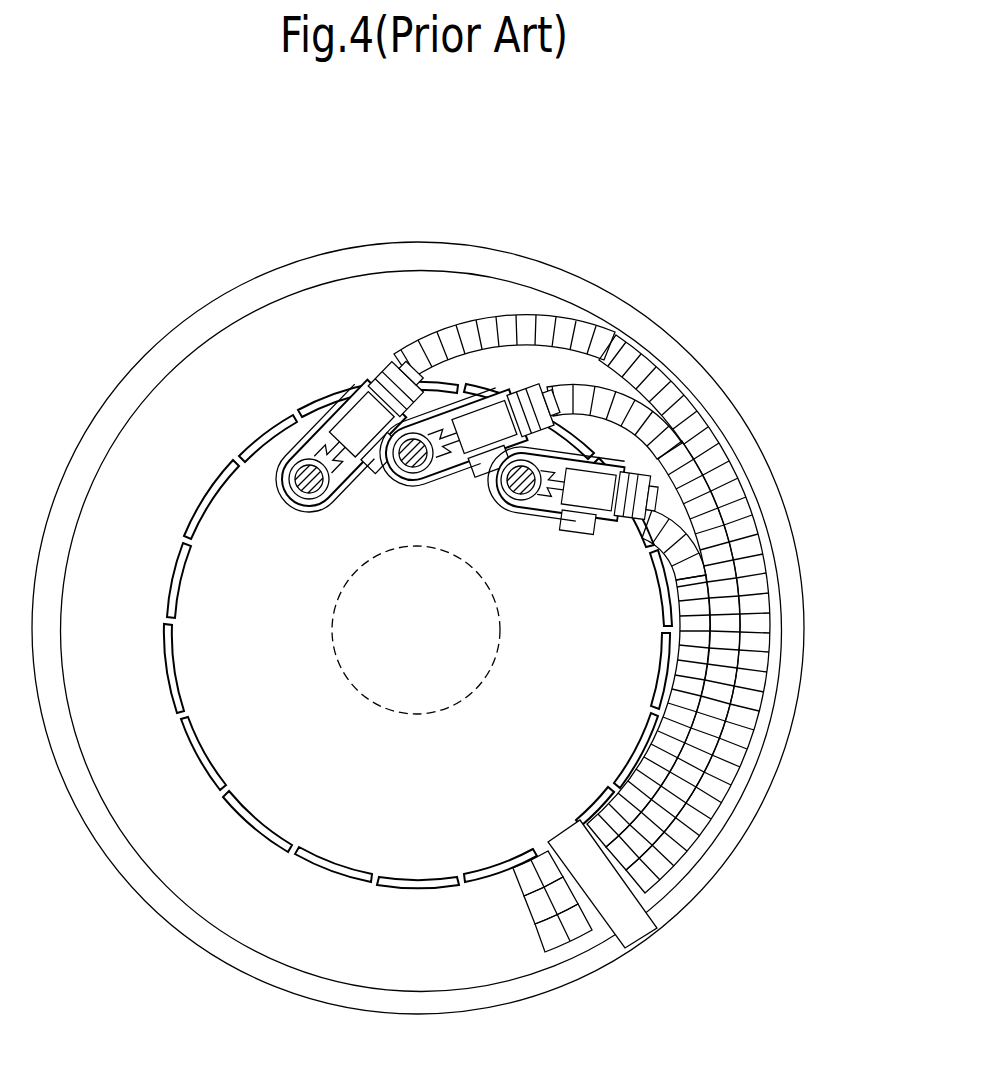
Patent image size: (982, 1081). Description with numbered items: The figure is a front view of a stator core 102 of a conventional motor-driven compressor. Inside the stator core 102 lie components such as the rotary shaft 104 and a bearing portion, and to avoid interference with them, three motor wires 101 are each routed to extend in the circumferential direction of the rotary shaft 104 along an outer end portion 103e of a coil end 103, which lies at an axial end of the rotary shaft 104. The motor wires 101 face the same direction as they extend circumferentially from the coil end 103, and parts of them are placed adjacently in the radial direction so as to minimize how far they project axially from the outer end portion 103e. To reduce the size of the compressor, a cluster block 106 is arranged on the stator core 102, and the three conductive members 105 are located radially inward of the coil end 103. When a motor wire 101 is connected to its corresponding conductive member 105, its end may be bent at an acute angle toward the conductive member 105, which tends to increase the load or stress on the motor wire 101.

The motor wire 101 is at (650, 768).
The stator core 102 is at (675, 342).
The coil end 103 is at (377, 985).
The outer end portion 103e is at (455, 980).
The rotary shaft 104 is at (342, 667).
The conductive member 105 is at (340, 403).
The cluster block 106 is at (283, 502).